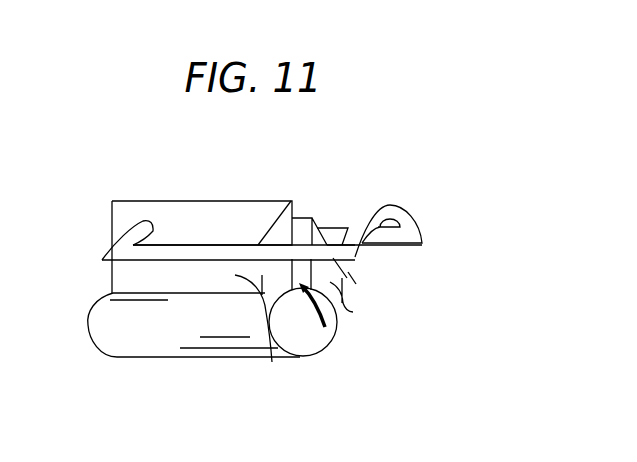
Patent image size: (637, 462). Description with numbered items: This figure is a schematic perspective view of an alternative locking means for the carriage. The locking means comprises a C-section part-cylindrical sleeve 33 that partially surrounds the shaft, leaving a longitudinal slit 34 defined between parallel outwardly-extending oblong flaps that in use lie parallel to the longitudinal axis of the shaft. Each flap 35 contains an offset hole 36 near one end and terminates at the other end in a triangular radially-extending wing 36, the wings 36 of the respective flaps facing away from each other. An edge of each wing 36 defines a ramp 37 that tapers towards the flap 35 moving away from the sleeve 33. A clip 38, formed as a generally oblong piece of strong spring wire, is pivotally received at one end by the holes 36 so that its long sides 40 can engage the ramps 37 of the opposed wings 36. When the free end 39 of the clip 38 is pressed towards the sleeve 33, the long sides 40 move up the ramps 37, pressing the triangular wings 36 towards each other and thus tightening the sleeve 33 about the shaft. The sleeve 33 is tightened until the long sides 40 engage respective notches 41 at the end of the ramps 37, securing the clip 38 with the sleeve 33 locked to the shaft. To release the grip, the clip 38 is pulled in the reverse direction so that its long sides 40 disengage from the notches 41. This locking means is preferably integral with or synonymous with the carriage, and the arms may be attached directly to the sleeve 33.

The C-section part-cylindrical sleeve 33 is at (164, 351).
The longitudinal slit 34 is at (325, 327).
The flap 35 is at (215, 207).
The triangular radially-extending wing 36 is at (139, 226).
The ramp 37 is at (274, 212).
The clip 38 is at (113, 262).
The free end of the clip 39 is at (408, 218).
The long sides of the clip 40 is at (198, 259).
The notches 41 is at (353, 276).